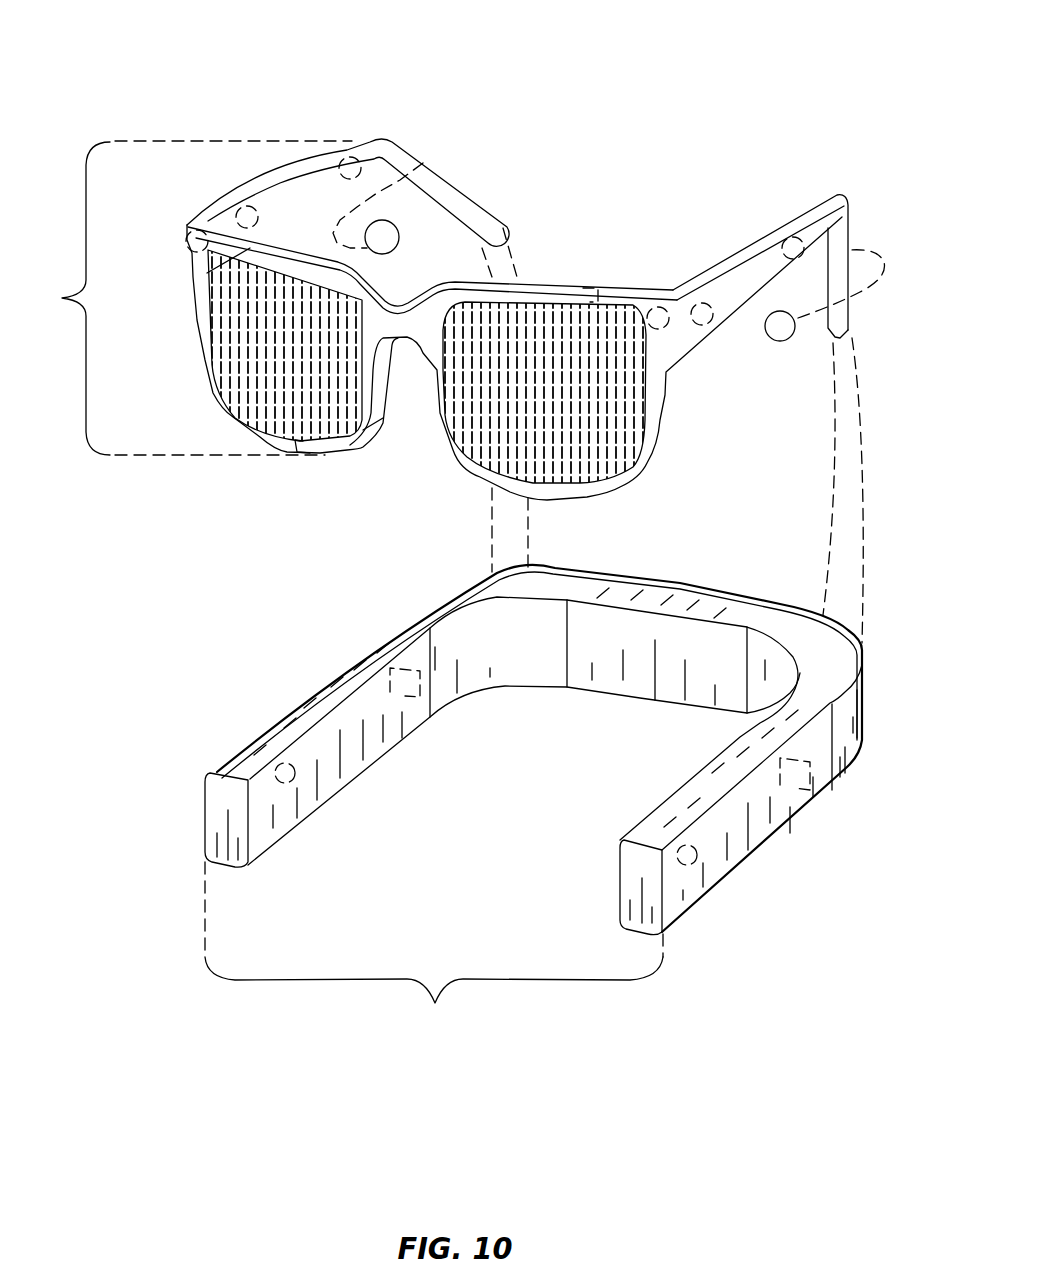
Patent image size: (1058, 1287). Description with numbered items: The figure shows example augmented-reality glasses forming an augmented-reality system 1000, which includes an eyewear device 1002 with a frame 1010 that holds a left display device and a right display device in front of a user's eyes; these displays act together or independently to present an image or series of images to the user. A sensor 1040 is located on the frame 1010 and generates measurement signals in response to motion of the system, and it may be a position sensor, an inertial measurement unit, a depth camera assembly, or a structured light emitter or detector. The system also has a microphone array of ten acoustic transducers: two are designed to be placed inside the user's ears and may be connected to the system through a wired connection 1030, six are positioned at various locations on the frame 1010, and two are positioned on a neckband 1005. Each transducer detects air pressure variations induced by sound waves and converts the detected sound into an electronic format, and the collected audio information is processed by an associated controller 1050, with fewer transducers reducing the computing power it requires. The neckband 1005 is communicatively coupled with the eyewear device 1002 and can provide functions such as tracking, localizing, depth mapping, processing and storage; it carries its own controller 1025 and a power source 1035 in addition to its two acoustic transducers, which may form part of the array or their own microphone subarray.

The augmented-reality system 1000 is at (153, 81).
The eyewear device 1002 is at (184, 298).
The neckband 1005 is at (533, 797).
The frame 1010 is at (412, 146).
The controller 1025 is at (782, 780).
The wired connection 1030 is at (848, 507).
The power source 1035 is at (397, 693).
The sensor 1040 is at (297, 452).
The controller 1050 is at (592, 290).